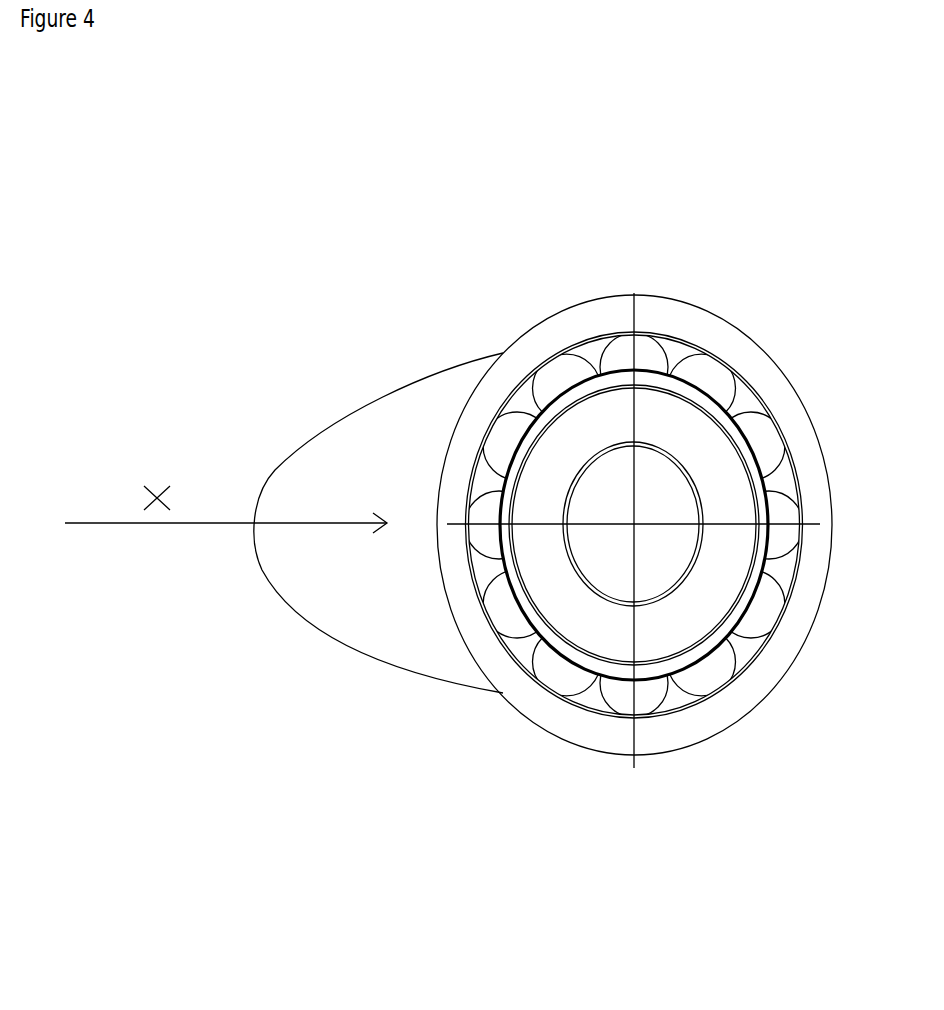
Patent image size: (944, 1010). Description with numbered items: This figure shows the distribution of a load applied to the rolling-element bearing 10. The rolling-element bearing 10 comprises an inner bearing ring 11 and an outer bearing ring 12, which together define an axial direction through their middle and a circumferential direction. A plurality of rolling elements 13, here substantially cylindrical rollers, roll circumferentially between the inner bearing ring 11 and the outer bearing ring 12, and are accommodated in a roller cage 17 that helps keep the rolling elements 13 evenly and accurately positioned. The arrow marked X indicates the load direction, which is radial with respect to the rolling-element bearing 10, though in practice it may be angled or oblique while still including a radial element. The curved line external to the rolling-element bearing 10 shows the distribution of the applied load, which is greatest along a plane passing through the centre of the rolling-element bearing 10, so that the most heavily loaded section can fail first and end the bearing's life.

The rolling-element bearing 10 is at (634, 489).
The inner bearing ring 11 is at (667, 608).
The outer bearing ring 12 is at (572, 325).
The rolling elements 13 is at (557, 675).
The roller cage 17 is at (733, 638).